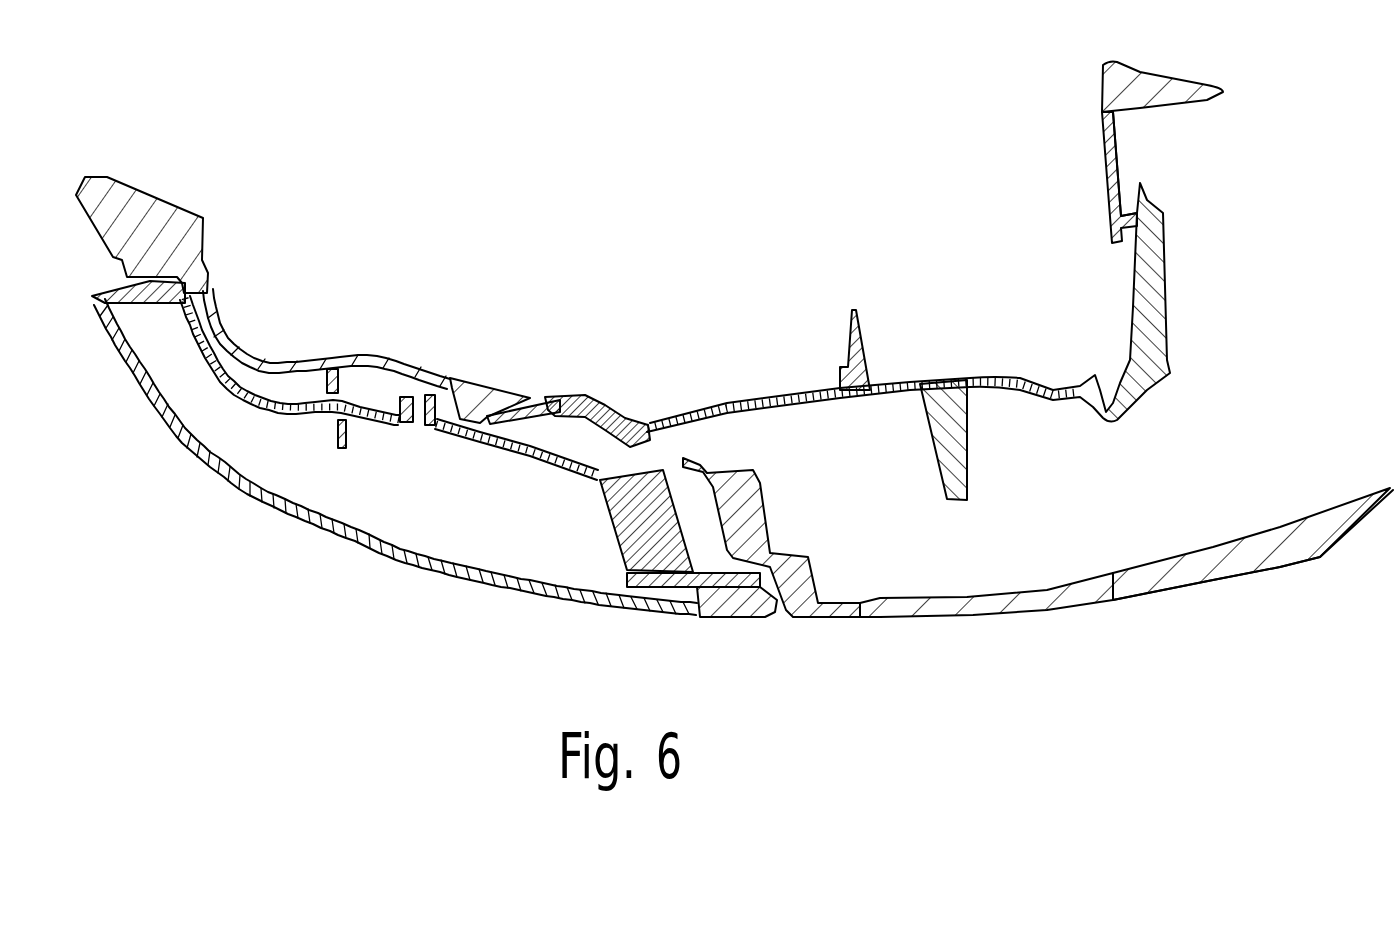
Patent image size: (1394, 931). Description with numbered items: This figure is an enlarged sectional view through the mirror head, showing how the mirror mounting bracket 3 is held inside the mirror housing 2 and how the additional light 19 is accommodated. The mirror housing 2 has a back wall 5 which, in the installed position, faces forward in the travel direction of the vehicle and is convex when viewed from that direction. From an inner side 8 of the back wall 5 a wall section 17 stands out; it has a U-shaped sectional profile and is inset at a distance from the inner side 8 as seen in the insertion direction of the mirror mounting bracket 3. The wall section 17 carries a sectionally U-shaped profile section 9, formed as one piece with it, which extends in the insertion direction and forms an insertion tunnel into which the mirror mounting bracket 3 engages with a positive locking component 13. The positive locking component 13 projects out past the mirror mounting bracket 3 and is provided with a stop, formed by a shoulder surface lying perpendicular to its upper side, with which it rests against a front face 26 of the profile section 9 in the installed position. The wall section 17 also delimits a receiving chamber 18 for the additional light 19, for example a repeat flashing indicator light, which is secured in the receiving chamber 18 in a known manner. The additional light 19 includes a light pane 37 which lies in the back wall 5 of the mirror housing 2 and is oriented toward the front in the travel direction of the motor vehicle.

The mirror housing 2 is at (1281, 568).
The mirror mounting bracket 3 is at (1022, 372).
The back wall 5 is at (1122, 585).
The inner side 8 is at (985, 605).
The profile section 9 is at (487, 380).
The positive locking component 13 is at (543, 407).
The wall section 17 is at (397, 358).
The receiving chamber 18 is at (367, 392).
The additional light 19 is at (400, 563).
The front face 26 is at (530, 403).
The light pane 37 is at (212, 473).